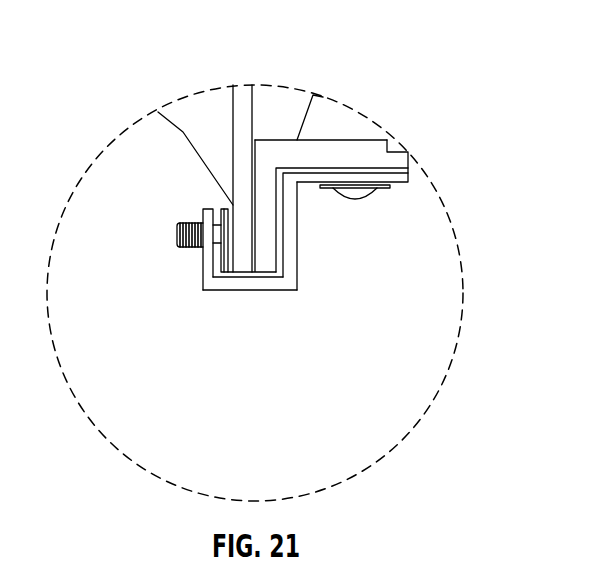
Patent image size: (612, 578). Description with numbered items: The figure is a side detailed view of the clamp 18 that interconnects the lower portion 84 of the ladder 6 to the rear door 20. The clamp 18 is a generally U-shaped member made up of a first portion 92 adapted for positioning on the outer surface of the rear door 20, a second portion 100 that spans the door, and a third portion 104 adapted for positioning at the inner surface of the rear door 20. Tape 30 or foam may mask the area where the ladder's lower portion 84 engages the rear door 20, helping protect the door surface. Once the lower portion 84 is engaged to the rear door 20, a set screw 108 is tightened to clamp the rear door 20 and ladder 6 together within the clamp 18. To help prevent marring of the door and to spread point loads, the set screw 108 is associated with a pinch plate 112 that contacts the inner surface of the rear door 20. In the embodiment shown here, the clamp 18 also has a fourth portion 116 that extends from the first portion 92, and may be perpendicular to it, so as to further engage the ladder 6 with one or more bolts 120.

The ladder 6 is at (343, 120).
The clamp 18 is at (280, 291).
The rear door 20 is at (240, 139).
The tape 30 is at (257, 187).
The lower portion of the ladder 84 is at (273, 255).
The first portion 92 is at (295, 230).
The second portion 100 is at (255, 288).
The third portion 104 is at (207, 263).
The set screw 108 is at (177, 233).
The pinch plate 112 is at (225, 274).
The fourth portion 116 is at (410, 167).
The bolt 120 is at (357, 199).